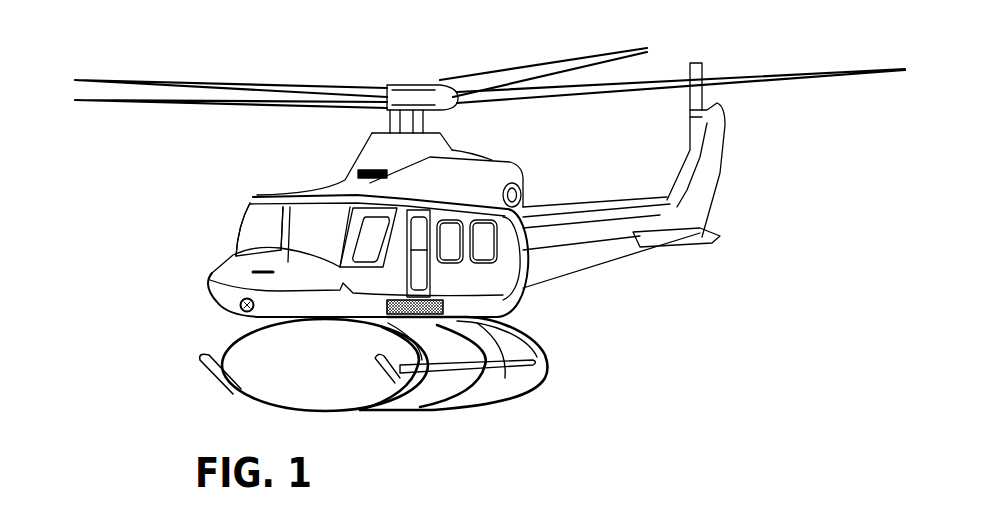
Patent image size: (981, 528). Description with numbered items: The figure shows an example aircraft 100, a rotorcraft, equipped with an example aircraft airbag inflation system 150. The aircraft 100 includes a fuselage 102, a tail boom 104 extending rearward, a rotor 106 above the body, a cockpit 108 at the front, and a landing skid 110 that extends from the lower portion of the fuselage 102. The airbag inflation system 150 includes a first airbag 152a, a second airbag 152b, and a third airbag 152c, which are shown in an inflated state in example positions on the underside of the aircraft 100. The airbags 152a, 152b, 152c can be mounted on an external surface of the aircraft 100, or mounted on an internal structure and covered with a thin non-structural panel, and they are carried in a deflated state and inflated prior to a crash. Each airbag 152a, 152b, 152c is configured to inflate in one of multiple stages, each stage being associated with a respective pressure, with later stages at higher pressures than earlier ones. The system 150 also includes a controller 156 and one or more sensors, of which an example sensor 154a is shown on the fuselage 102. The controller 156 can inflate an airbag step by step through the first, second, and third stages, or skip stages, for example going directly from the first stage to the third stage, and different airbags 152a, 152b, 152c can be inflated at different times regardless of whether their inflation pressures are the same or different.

The aircraft 100 is at (88, 196).
The fuselage 102 is at (212, 283).
The tail boom 104 is at (610, 260).
The rotor 106 is at (487, 72).
The cockpit 108 is at (237, 233).
The landing skid 110 is at (213, 377).
The aircraft airbag inflation system 150 is at (568, 386).
The first airbag 152a is at (480, 405).
The second airbag 152b is at (413, 405).
The third airbag 152c is at (350, 410).
The sensor 154a is at (245, 311).
The controller 156 is at (443, 306).